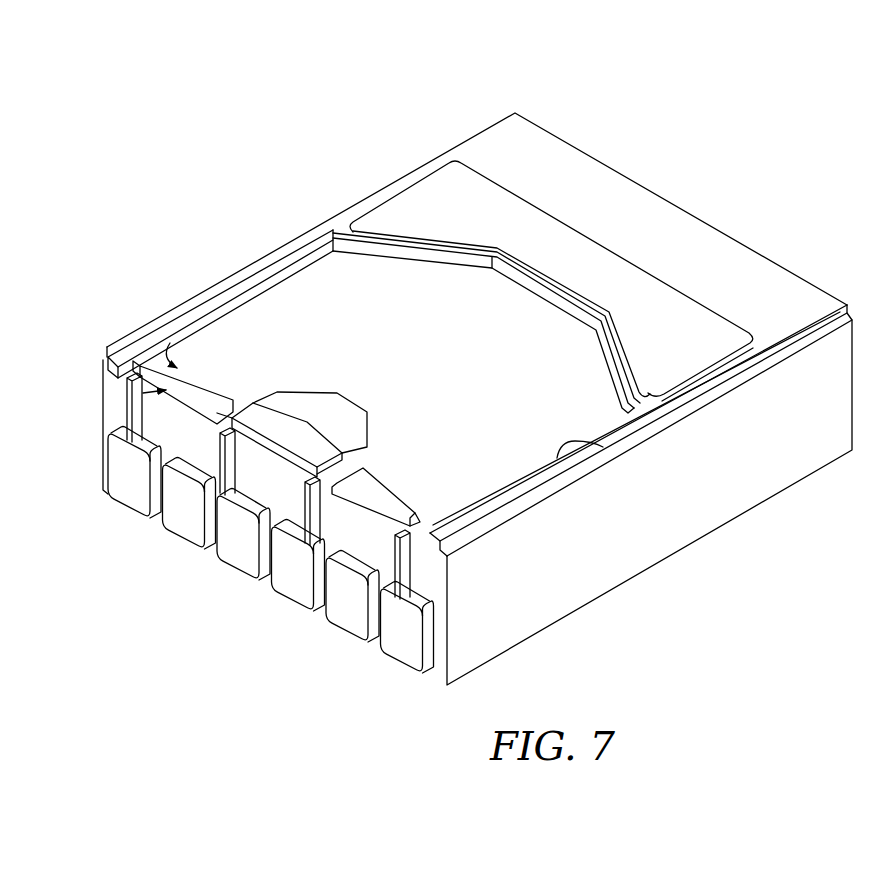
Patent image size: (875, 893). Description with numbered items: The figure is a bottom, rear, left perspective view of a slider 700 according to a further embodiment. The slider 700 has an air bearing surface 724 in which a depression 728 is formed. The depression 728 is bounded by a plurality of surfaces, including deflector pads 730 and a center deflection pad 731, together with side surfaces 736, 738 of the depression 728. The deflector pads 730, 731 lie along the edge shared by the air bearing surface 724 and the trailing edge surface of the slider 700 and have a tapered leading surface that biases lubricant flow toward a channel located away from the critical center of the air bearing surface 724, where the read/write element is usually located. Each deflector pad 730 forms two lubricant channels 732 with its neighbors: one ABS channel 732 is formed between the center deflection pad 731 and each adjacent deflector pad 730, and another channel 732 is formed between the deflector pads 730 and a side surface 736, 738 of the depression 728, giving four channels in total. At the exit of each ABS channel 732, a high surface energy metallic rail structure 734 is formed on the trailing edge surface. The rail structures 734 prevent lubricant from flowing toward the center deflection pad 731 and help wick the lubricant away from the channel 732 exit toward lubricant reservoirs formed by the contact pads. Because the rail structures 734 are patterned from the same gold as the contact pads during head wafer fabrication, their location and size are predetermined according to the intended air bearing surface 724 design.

The slider 700 is at (630, 125).
The air bearing surface 724 is at (640, 235).
The depression 728 is at (577, 349).
The deflector pad 730 is at (213, 385).
The center deflection pad 731 is at (359, 396).
The ABS channel 732 is at (427, 521).
The high surface energy metallic rail structure 734 is at (408, 583).
The side surface of the depression 736 is at (263, 283).
The side surface of the depression 738 is at (583, 443).